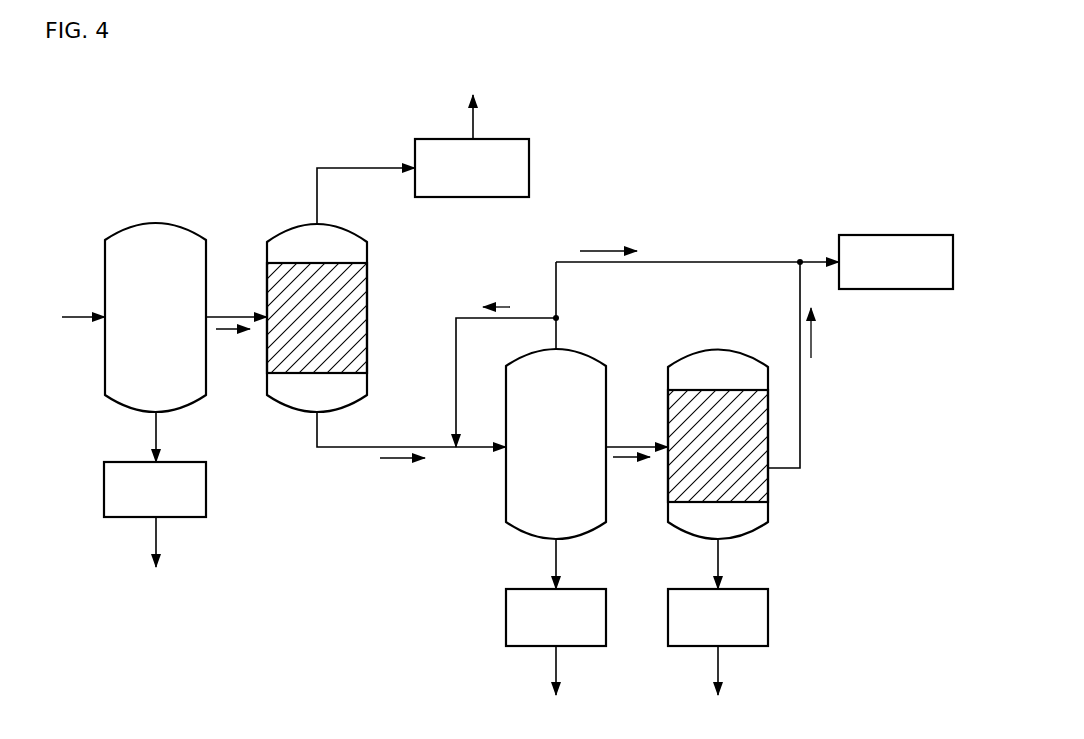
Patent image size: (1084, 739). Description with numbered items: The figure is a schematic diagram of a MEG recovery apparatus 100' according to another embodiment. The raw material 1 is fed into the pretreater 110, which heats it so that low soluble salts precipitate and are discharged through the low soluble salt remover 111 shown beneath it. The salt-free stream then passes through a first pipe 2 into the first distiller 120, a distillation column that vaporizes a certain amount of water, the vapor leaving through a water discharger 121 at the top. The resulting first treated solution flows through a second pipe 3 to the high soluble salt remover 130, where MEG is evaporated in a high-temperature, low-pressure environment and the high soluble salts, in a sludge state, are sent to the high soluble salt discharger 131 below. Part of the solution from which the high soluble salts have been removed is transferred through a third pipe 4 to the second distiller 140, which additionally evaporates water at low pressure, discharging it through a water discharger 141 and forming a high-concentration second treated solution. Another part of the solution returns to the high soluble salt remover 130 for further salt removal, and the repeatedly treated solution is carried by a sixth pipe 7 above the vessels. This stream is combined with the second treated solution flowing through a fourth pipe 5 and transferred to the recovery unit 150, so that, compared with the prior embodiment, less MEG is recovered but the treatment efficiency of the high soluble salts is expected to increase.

The MEG recovery apparatus 100' is at (503, 376).
The raw material 1 is at (74, 317).
The first pipe 2 is at (235, 315).
The second pipe 3 is at (337, 449).
The third pipe 4 is at (634, 445).
The fourth pipe 5 is at (800, 408).
The sixth pipe 7 is at (695, 262).
The pretreater 110 is at (155, 222).
The low soluble salt remover 111 is at (173, 462).
The first distiller 120 is at (335, 222).
The water discharger 121 is at (492, 138).
The high soluble salt remover 130 is at (576, 350).
The high soluble salt discharger 131 is at (575, 589).
The second distiller 140 is at (720, 350).
The water discharger 141 is at (737, 589).
The recovery unit 150 is at (893, 235).